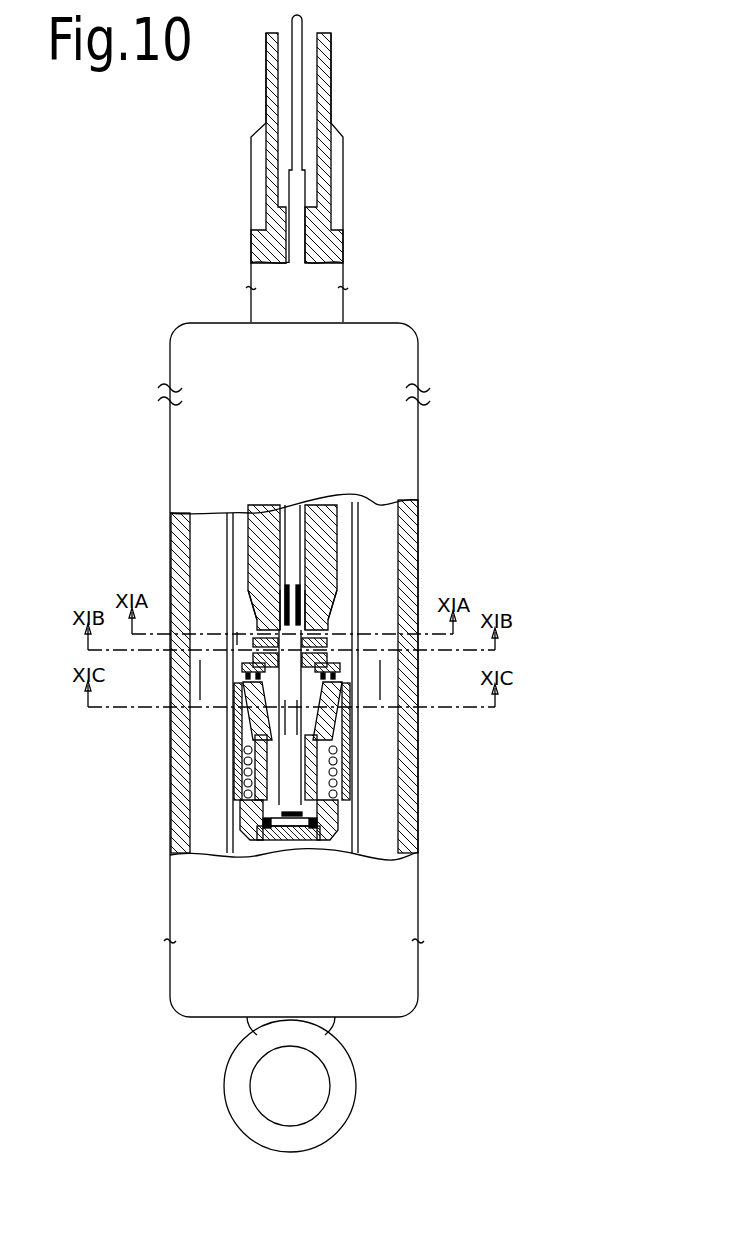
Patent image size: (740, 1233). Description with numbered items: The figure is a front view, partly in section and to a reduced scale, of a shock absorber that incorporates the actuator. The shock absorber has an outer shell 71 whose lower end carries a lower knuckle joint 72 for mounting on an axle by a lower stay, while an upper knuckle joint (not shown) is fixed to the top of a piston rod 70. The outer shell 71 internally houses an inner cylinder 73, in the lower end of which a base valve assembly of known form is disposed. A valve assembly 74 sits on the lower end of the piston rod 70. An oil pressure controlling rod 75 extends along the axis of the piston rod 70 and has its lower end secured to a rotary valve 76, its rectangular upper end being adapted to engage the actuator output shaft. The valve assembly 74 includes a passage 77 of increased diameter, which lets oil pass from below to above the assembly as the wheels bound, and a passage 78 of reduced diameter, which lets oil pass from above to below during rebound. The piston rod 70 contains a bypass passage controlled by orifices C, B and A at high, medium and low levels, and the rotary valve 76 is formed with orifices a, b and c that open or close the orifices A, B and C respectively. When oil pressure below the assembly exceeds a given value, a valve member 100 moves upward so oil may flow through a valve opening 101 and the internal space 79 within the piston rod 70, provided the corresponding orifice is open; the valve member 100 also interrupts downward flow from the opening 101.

The piston rod 70 is at (327, 277).
The outer shell 71 is at (171, 515).
The lower knuckle joint 72 is at (343, 1062).
The inner cylinder 73 is at (227, 575).
The valve assembly 74 is at (235, 735).
The oil pressure controlling rod 75 is at (305, 192).
The rotary valve 76 is at (332, 594).
The passage of increased diameter 77 is at (357, 723).
The passage of reduced diameter 78 is at (232, 718).
The internal space 79 is at (357, 780).
The valve member 100 is at (296, 832).
The valve opening 101 is at (290, 835).
The orifice a is at (330, 640).
The orifice b is at (340, 648).
The orifice c is at (303, 773).
The orifice A is at (226, 624).
The orifice B is at (171, 680).
The orifice C is at (408, 680).